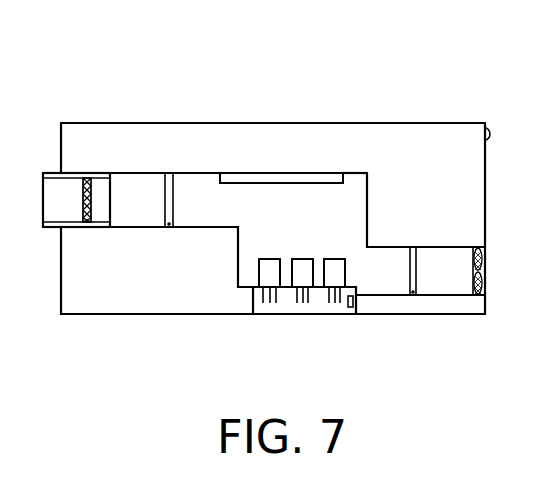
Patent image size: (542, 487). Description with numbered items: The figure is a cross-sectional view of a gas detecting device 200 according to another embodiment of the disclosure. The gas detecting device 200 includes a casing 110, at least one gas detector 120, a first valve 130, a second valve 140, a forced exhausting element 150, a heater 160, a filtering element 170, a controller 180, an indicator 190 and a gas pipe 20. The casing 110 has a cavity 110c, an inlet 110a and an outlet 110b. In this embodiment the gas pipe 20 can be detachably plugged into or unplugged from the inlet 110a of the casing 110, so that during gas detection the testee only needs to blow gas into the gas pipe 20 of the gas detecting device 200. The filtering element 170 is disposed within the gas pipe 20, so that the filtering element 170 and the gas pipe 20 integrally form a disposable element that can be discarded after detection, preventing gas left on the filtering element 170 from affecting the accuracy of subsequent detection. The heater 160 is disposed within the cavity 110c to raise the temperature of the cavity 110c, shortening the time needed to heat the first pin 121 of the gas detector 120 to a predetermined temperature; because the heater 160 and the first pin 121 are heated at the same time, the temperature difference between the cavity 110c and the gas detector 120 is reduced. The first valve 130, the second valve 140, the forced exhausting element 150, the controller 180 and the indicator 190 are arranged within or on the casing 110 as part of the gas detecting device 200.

The gas detecting device 200 is at (152, 38).
The gas pipe 20 is at (53, 172).
The filtering element 170 is at (86, 176).
The first valve 130 is at (168, 173).
The heater 160 is at (272, 178).
The casing 110 is at (365, 132).
The inlet 110a is at (138, 217).
The outlet 110b is at (458, 258).
The cavity 110c is at (328, 212).
The gas detector 120 is at (298, 271).
The first pin 121 is at (344, 296).
The controller 180 is at (352, 302).
The second valve 140 is at (414, 278).
The forced exhausting element 150 is at (477, 296).
The indicator 190 is at (487, 128).